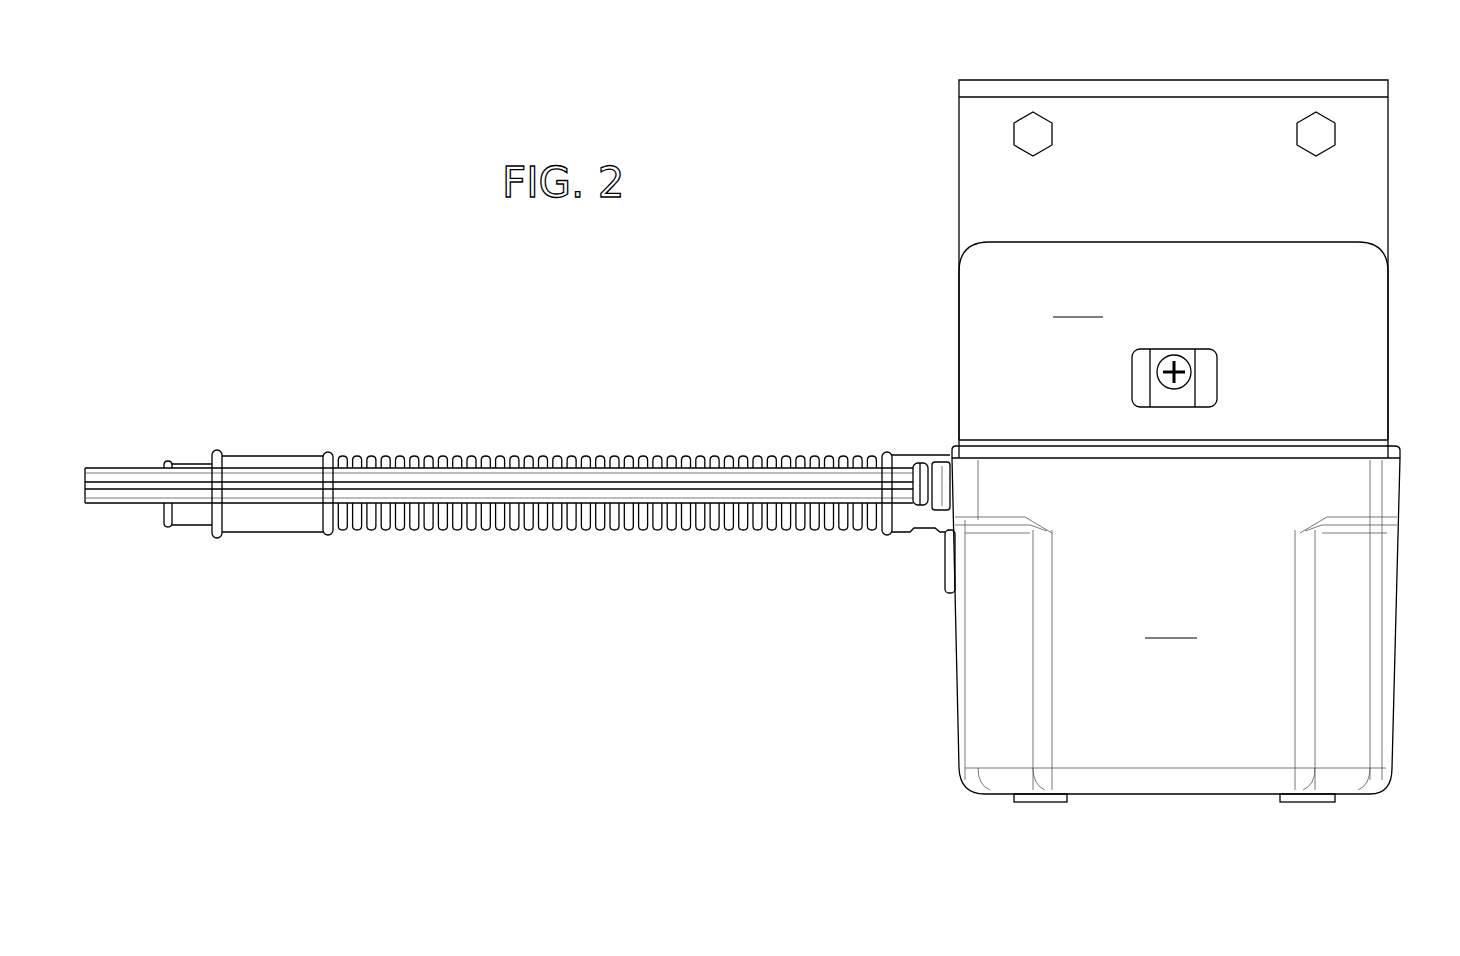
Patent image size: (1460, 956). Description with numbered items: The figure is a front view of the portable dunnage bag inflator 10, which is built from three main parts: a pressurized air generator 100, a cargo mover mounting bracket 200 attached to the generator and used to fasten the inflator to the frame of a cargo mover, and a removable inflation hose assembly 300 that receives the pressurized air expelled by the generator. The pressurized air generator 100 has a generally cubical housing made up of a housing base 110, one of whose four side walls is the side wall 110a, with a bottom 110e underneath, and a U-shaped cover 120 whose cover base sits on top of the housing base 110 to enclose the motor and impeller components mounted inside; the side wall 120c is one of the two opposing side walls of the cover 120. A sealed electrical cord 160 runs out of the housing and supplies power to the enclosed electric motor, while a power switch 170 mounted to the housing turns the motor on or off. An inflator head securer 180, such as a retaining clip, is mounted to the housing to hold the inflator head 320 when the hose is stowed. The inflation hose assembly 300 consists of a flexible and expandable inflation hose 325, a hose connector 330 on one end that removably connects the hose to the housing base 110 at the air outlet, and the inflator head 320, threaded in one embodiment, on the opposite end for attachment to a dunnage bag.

The portable dunnage bag inflator 10 is at (314, 283).
The pressurized air generator 100 is at (1398, 728).
The housing base 110 is at (1187, 659).
The side wall 110a is at (1171, 626).
The bottom 110e is at (1173, 794).
The U-shaped cover 120 is at (1392, 385).
The side wall 120c is at (1079, 305).
The sealed electrical cord 160 is at (120, 467).
The power switch 170 is at (945, 585).
The inflator head securer 180 is at (1217, 380).
The cargo mover mounting bracket 200 is at (1186, 78).
The inflation hose assembly 300 is at (164, 566).
The inflator head 320 is at (247, 536).
The inflation hose 325 is at (408, 540).
The hose connector 330 is at (900, 537).